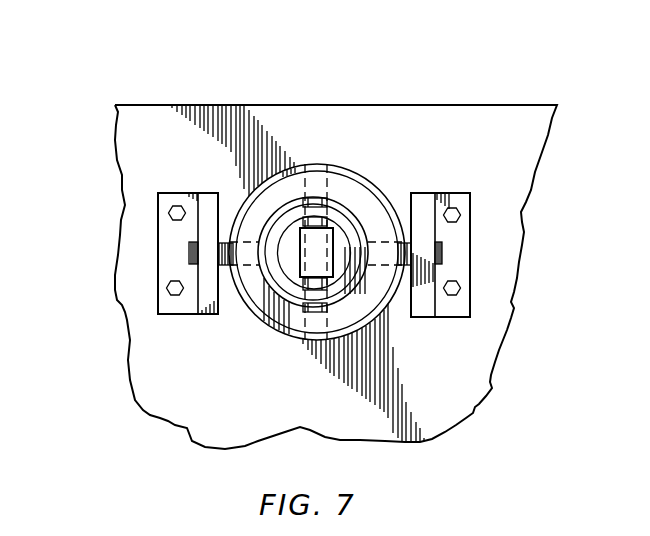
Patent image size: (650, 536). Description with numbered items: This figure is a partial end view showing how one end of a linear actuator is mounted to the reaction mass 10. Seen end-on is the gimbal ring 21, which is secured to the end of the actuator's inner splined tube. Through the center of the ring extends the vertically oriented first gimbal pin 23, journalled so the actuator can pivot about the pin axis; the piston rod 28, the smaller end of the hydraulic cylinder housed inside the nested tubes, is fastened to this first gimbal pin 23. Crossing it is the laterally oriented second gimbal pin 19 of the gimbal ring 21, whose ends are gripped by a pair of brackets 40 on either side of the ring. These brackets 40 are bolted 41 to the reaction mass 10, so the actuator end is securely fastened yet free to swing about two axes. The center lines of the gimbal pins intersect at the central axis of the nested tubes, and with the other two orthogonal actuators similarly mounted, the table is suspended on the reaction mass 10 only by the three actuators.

The reaction mass 10 is at (475, 131).
The second gimbal pin 19 is at (189, 247).
The gimbal ring 21 is at (373, 210).
The first gimbal pin 23 is at (320, 180).
The piston rod 28 is at (302, 262).
The brackets 40 is at (167, 303).
The bolts 41 is at (178, 208).